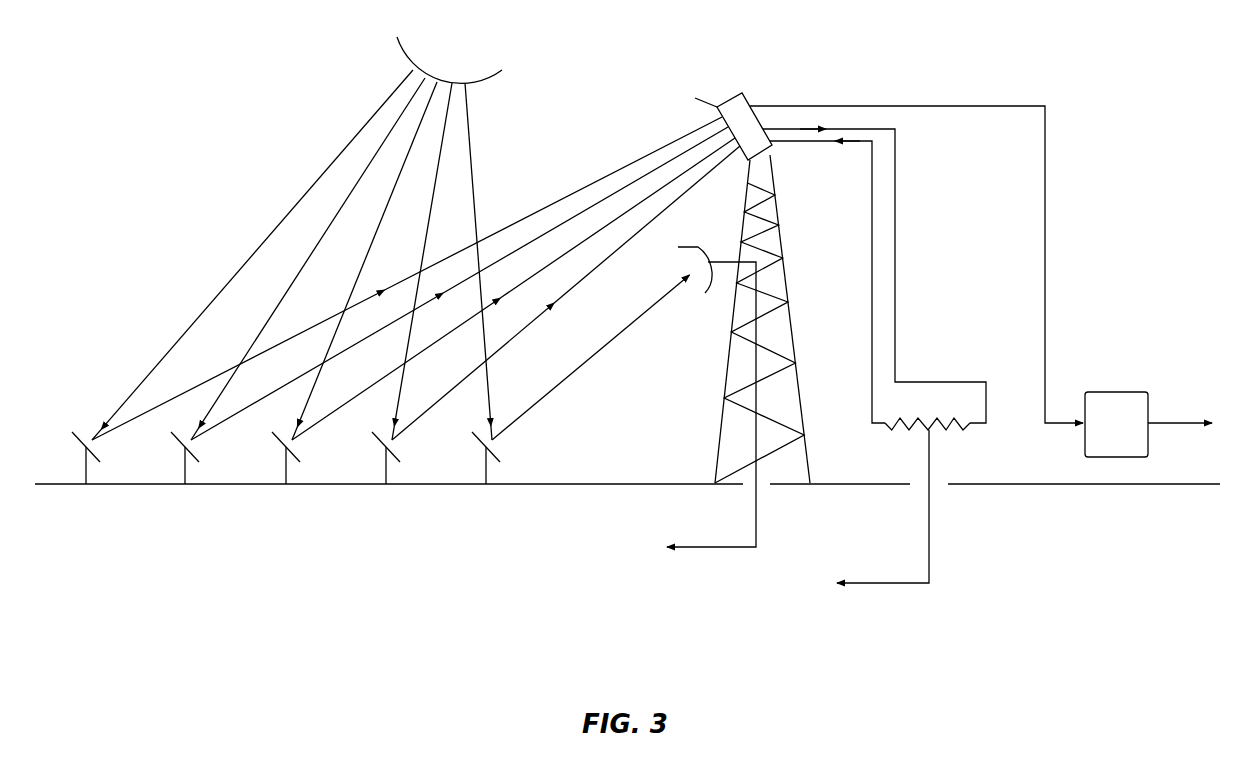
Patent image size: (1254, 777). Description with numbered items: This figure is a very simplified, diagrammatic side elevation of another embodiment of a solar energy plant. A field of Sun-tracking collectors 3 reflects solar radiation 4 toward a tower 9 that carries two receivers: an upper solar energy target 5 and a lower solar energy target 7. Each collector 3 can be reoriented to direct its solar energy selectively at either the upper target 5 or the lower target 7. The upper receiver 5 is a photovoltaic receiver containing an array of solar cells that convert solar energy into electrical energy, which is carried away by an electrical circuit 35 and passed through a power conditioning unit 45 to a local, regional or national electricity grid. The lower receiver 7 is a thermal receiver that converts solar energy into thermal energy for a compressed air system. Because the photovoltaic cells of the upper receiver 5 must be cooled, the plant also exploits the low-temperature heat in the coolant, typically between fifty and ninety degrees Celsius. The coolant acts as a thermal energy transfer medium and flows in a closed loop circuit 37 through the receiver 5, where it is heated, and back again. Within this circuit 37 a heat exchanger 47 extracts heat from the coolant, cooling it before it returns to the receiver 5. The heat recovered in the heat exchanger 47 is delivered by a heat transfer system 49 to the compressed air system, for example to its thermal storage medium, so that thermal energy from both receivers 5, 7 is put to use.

The collectors 3 is at (252, 257).
The reflected concentrated solar radiation 4 is at (568, 196).
The upper solar energy target 5 is at (743, 106).
The lower solar energy target 7 is at (693, 298).
The tower 9 is at (795, 314).
The electrical circuit 35 is at (1100, 320).
The closed loop circuit 37 is at (946, 318).
The power conditioning unit 45 is at (1108, 392).
The heat exchanger 47 is at (960, 437).
The heat transfer system 49 is at (878, 603).